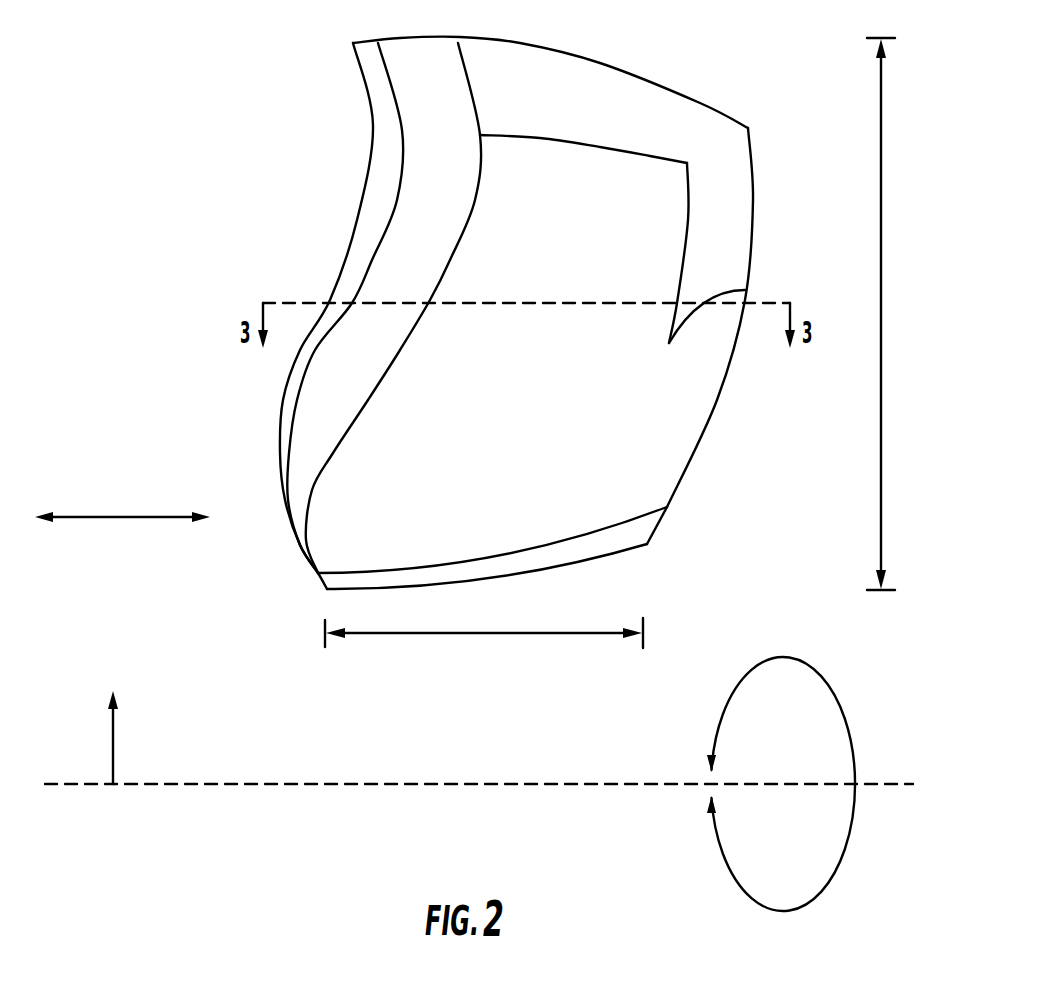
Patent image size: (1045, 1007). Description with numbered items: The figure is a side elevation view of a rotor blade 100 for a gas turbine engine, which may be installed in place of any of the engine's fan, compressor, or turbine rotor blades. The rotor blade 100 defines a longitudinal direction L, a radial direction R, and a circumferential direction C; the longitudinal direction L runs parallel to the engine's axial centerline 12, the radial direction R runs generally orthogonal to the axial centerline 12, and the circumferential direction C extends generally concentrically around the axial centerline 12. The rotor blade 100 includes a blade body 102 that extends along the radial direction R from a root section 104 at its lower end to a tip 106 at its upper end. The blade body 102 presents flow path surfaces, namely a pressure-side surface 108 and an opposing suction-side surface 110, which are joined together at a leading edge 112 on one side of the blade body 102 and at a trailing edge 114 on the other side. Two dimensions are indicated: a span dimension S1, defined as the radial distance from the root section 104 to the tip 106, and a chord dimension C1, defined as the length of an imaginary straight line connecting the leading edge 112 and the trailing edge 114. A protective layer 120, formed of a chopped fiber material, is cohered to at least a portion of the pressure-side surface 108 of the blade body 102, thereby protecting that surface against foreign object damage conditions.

The rotor blade 100 is at (140, 81).
The blade body 102 is at (640, 123).
The root section 104 is at (322, 585).
The tip 106 is at (579, 52).
The pressure-side surface 108 is at (577, 394).
The suction-side surface 110 is at (360, 119).
The leading edge 112 is at (300, 350).
The trailing edge 114 is at (729, 357).
The protective layer 120 is at (478, 363).
The axial centerline 12 is at (210, 785).
The span dimension S1 is at (881, 315).
The chord dimension C1 is at (457, 634).
The longitudinal direction L is at (93, 518).
The radial direction R is at (113, 742).
The circumferential direction C is at (832, 690).